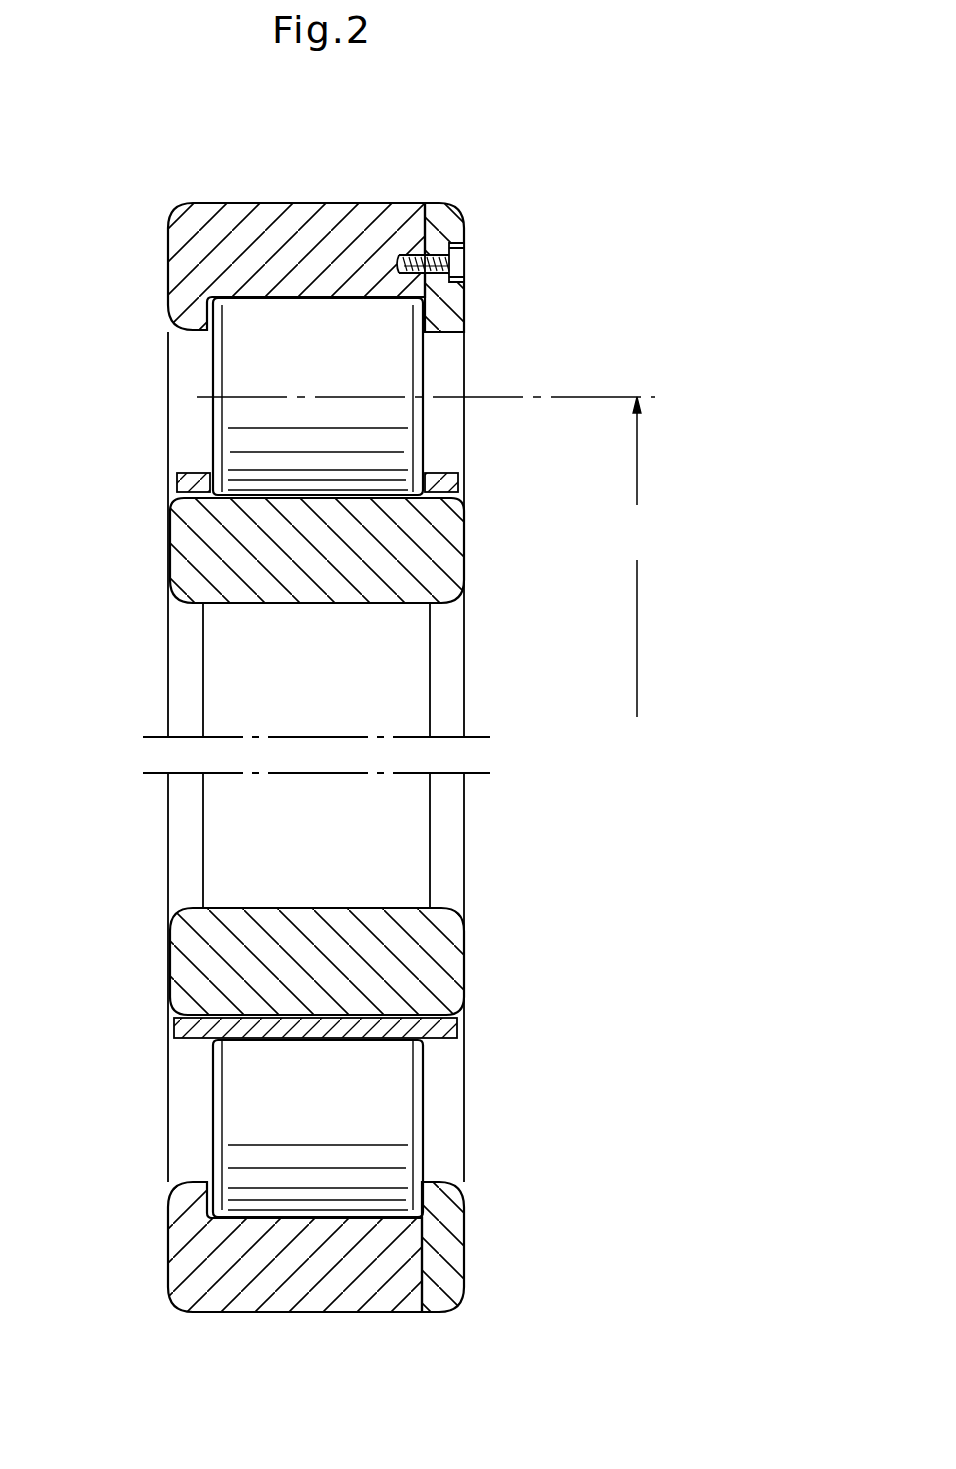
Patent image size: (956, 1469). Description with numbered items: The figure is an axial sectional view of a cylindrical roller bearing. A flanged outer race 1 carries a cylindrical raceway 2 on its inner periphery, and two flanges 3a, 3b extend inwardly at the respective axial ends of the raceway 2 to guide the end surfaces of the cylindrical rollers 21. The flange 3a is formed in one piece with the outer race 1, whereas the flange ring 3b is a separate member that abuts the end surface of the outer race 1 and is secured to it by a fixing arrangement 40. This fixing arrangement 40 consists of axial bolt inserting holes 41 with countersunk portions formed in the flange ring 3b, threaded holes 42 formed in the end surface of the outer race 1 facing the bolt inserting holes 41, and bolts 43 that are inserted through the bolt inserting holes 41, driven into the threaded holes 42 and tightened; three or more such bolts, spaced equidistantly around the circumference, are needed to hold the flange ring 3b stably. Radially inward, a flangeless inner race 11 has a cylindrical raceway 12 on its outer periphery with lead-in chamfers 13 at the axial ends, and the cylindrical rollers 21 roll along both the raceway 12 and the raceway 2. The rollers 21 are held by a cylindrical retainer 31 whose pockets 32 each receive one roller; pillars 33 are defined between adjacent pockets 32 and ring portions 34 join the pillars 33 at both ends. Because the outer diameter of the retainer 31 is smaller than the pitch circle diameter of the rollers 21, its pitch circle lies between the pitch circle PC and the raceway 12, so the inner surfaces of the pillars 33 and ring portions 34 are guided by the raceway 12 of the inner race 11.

The outer race 1 is at (210, 215).
The raceway 2 is at (278, 304).
The flange 3a is at (185, 292).
The flange ring 3b is at (458, 309).
The fixing arrangement 40 is at (465, 197).
The bolt inserting hole 41 is at (452, 246).
The threaded hole 42 is at (397, 262).
The bolt 43 is at (418, 252).
The inner race 11 is at (182, 562).
The raceway 12 is at (292, 497).
The lead-in chamfer 13 is at (183, 496).
The cylindrical roller 21 is at (235, 362).
The retainer 31 is at (318, 765).
The pocket 32 is at (466, 522).
The pillar 33 is at (268, 1033).
The ring portion 34 is at (190, 478).
The pitch circle PC is at (633, 557).